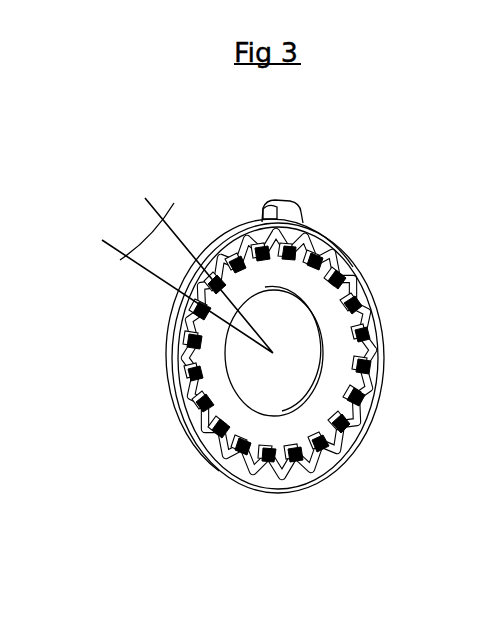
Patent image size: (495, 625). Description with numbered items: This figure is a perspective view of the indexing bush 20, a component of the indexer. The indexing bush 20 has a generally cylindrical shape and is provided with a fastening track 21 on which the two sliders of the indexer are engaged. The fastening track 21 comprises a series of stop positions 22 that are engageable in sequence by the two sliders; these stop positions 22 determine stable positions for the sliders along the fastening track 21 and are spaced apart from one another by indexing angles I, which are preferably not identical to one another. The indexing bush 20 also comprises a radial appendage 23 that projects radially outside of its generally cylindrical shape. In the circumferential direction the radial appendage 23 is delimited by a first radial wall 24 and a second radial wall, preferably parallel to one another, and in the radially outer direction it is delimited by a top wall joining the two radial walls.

The indexing bush 20 is at (187, 413).
The fastening track 21 is at (350, 292).
The stop positions 22 is at (333, 250).
The radial appendage 23 is at (292, 210).
The first radial wall 24 is at (265, 208).
The indexing angles I is at (187, 275).